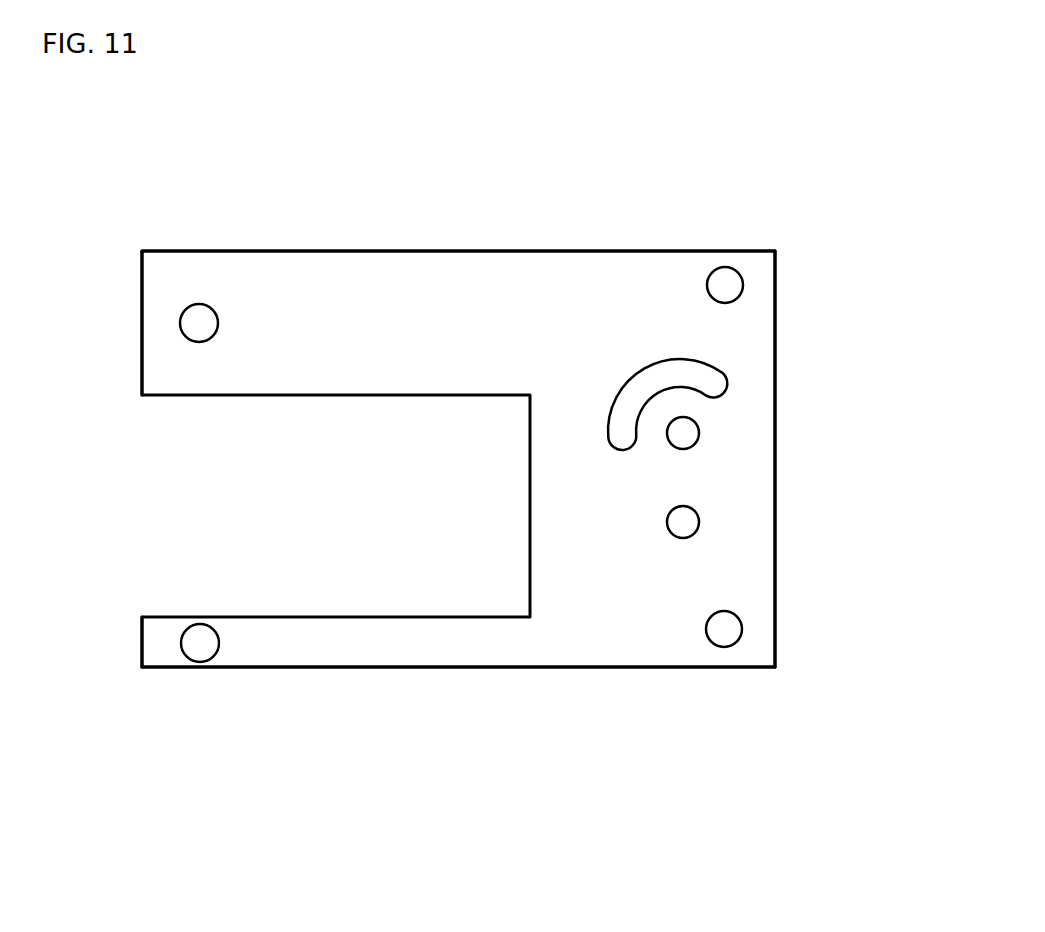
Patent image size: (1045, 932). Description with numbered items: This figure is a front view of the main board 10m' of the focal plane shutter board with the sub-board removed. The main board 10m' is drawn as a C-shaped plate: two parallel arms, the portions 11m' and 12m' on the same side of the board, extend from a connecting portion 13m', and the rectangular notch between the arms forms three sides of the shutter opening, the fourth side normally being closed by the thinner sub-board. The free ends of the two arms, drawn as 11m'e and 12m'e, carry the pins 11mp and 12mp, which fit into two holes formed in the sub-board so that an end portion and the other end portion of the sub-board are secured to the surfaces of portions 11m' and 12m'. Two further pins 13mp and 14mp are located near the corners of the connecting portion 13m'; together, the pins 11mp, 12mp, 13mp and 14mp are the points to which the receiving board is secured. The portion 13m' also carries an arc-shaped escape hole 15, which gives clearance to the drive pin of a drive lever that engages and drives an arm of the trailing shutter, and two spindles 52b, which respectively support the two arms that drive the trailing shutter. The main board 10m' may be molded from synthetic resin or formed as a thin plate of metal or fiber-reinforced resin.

The main board 10m' is at (458, 546).
The portion of the main board 11m' is at (458, 713).
The portion of the main board 12m' is at (458, 358).
The portion of the main board 13m' is at (833, 459).
The end portion of lower arm 11m'e is at (126, 620).
The end portion of upper arm 12m'e is at (153, 349).
The pin 11mp is at (200, 643).
The pin 12mp is at (200, 327).
The pin 13mp is at (724, 629).
The pin 14mp is at (723, 285).
The escape hole 15 is at (722, 373).
The spindles 52b is at (683, 433).